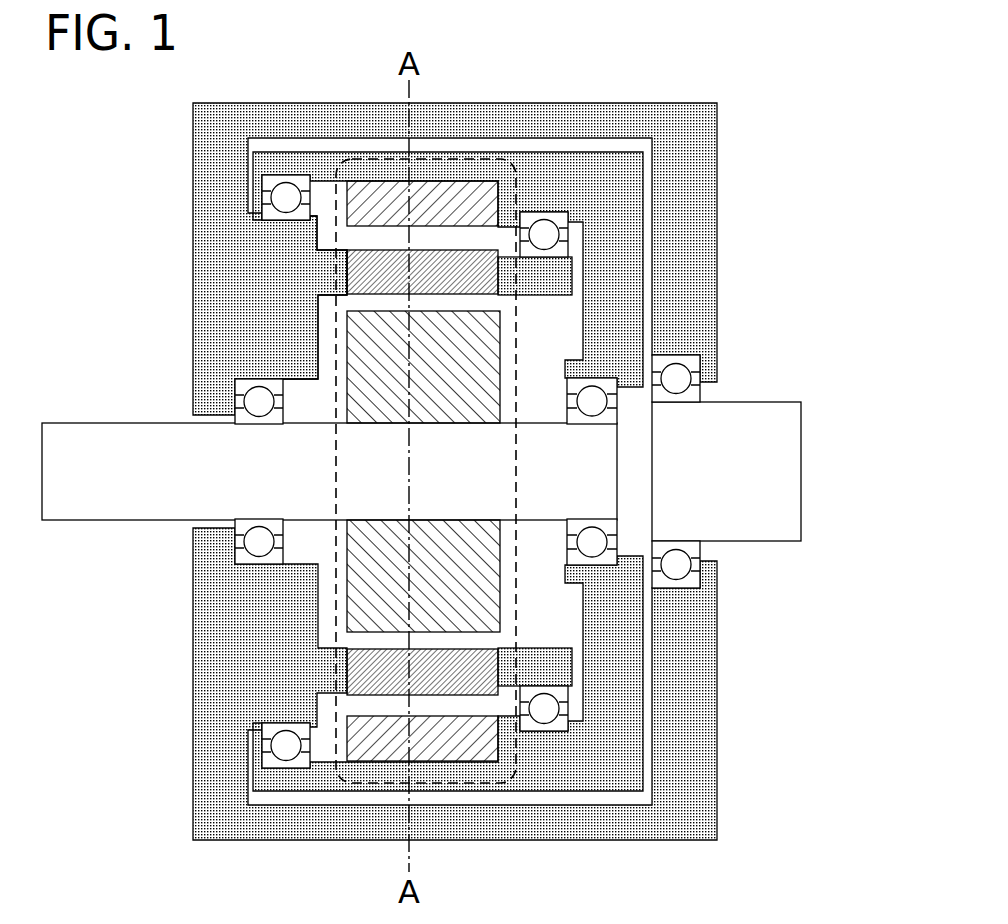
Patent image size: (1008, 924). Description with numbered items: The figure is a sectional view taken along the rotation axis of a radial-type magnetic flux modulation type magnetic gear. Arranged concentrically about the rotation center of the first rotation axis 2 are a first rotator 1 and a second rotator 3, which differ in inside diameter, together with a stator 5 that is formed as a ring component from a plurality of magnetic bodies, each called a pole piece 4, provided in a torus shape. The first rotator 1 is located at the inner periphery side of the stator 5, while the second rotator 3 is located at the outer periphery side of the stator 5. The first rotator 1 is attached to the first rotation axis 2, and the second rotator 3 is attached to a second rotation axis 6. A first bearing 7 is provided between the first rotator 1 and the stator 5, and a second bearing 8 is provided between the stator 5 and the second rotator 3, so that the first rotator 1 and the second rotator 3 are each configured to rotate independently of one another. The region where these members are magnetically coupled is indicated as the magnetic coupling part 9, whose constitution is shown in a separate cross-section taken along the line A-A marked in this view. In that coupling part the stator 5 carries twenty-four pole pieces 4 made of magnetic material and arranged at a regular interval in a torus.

The first rotator 1 is at (347, 602).
The first rotation axis 2 is at (127, 423).
The second rotator 3 is at (500, 747).
The pole piece 4 is at (345, 672).
The stator 5 is at (193, 622).
The second rotation axis 6 is at (802, 463).
The first bearing 7 is at (237, 382).
The second bearing 8 is at (262, 176).
The magnetic coupling part 9 is at (516, 182).